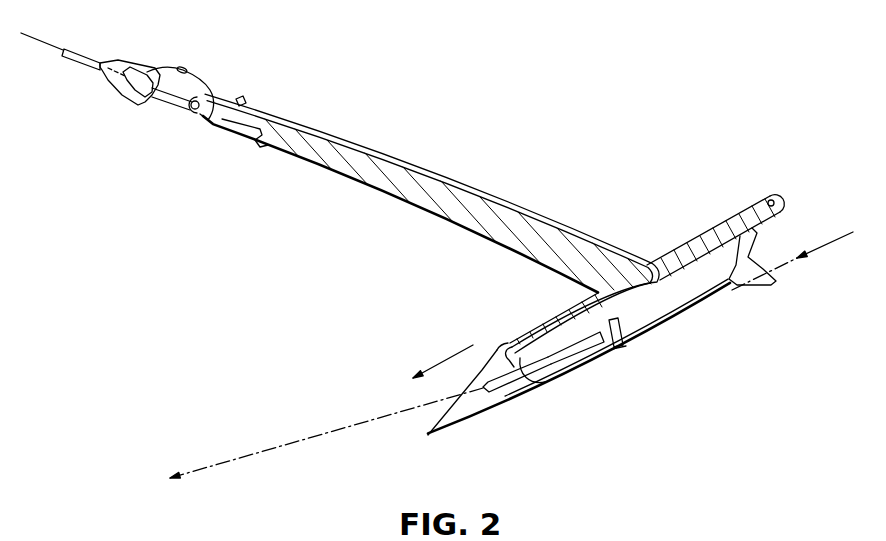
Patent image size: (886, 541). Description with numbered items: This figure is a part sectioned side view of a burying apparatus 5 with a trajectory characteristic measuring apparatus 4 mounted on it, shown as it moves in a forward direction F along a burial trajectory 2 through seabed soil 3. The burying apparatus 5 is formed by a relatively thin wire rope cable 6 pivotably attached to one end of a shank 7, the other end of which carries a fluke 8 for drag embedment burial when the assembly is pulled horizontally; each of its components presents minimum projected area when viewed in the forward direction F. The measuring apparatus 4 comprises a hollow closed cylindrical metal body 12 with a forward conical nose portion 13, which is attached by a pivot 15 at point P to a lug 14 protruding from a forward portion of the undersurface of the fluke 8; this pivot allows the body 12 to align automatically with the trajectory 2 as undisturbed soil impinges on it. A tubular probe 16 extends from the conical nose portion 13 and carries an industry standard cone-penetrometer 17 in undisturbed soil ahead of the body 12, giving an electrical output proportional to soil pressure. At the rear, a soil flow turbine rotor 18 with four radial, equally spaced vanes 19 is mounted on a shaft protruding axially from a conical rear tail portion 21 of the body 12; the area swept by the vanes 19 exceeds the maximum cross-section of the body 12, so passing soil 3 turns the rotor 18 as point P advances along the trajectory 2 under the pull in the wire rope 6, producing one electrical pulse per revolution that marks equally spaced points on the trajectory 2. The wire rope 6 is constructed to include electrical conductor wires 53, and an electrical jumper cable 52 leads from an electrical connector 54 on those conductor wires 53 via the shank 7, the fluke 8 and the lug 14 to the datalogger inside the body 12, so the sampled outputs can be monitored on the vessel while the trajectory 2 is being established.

The burial trajectory 2 is at (235, 462).
The seabed soil 3 is at (728, 134).
The trajectory characteristic measuring apparatus 4 is at (587, 362).
The burying apparatus 5 is at (568, 98).
The wire rope cable 6 is at (85, 52).
The shank 7 is at (474, 212).
The fluke 8 is at (712, 276).
The body 12 is at (556, 357).
The conical nose portion 13 is at (526, 385).
The lug 14 is at (517, 365).
The pivot 15 is at (540, 378).
The tubular probe 16 is at (500, 392).
The cone-penetrometer 17 is at (483, 392).
The soil flow turbine rotor 18 is at (655, 335).
The vanes 19 is at (620, 346).
The conical rear tail portion 21 is at (595, 342).
The electrical jumper cable 52 is at (356, 150).
The electrical conductor wires 53 is at (33, 35).
The electrical connector 54 is at (197, 66).
The point P is at (533, 390).
The forward direction F is at (437, 361).